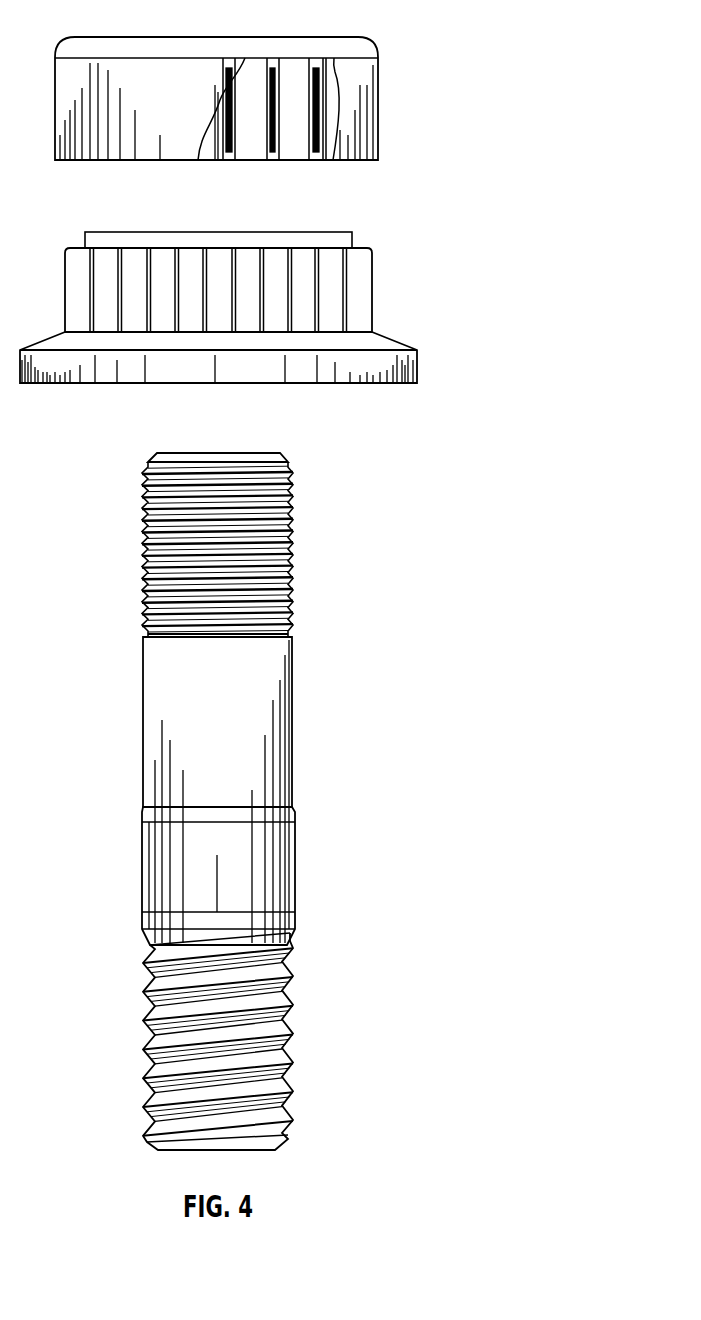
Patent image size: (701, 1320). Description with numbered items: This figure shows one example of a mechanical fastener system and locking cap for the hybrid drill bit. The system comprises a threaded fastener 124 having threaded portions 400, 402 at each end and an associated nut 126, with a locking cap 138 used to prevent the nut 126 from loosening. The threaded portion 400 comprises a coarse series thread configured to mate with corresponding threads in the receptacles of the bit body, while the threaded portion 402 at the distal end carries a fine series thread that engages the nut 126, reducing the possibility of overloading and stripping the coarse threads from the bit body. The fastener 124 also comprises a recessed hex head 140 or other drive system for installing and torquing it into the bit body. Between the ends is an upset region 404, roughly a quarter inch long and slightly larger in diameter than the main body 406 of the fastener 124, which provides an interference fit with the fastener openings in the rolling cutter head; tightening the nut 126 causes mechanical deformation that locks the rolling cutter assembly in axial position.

The locking cap 138 is at (315, 37).
The nut 126 is at (347, 290).
The threaded fastener 124 is at (221, 786).
The recessed hex head 140 is at (218, 453).
The threaded portion 402 is at (293, 533).
The main body 406 is at (272, 760).
The upset region 404 is at (273, 875).
The threaded portion 400 is at (293, 1008).